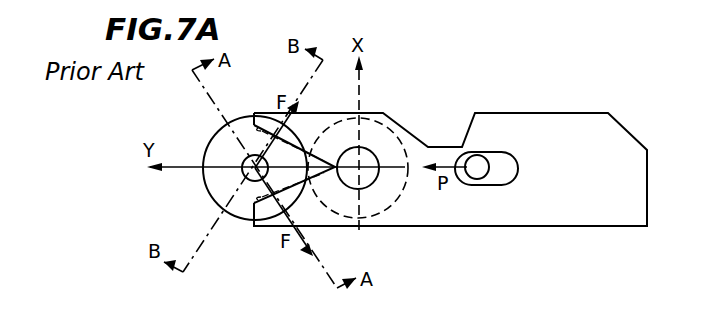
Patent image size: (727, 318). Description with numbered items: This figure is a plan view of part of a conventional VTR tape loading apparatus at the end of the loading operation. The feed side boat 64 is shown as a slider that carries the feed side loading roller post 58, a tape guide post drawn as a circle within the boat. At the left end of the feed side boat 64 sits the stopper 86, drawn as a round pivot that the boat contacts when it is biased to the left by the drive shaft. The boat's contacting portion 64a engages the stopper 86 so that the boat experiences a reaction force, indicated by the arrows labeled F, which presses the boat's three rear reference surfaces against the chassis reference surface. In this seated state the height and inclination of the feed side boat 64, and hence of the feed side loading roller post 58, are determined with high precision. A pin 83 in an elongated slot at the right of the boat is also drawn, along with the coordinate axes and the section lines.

The feed side boat 64 is at (571, 113).
The pawl / cam follower 64a is at (326, 132).
The stopper 86 is at (204, 172).
The feed side loading roller post 58 is at (374, 206).
The pin in slot 83 is at (478, 163).